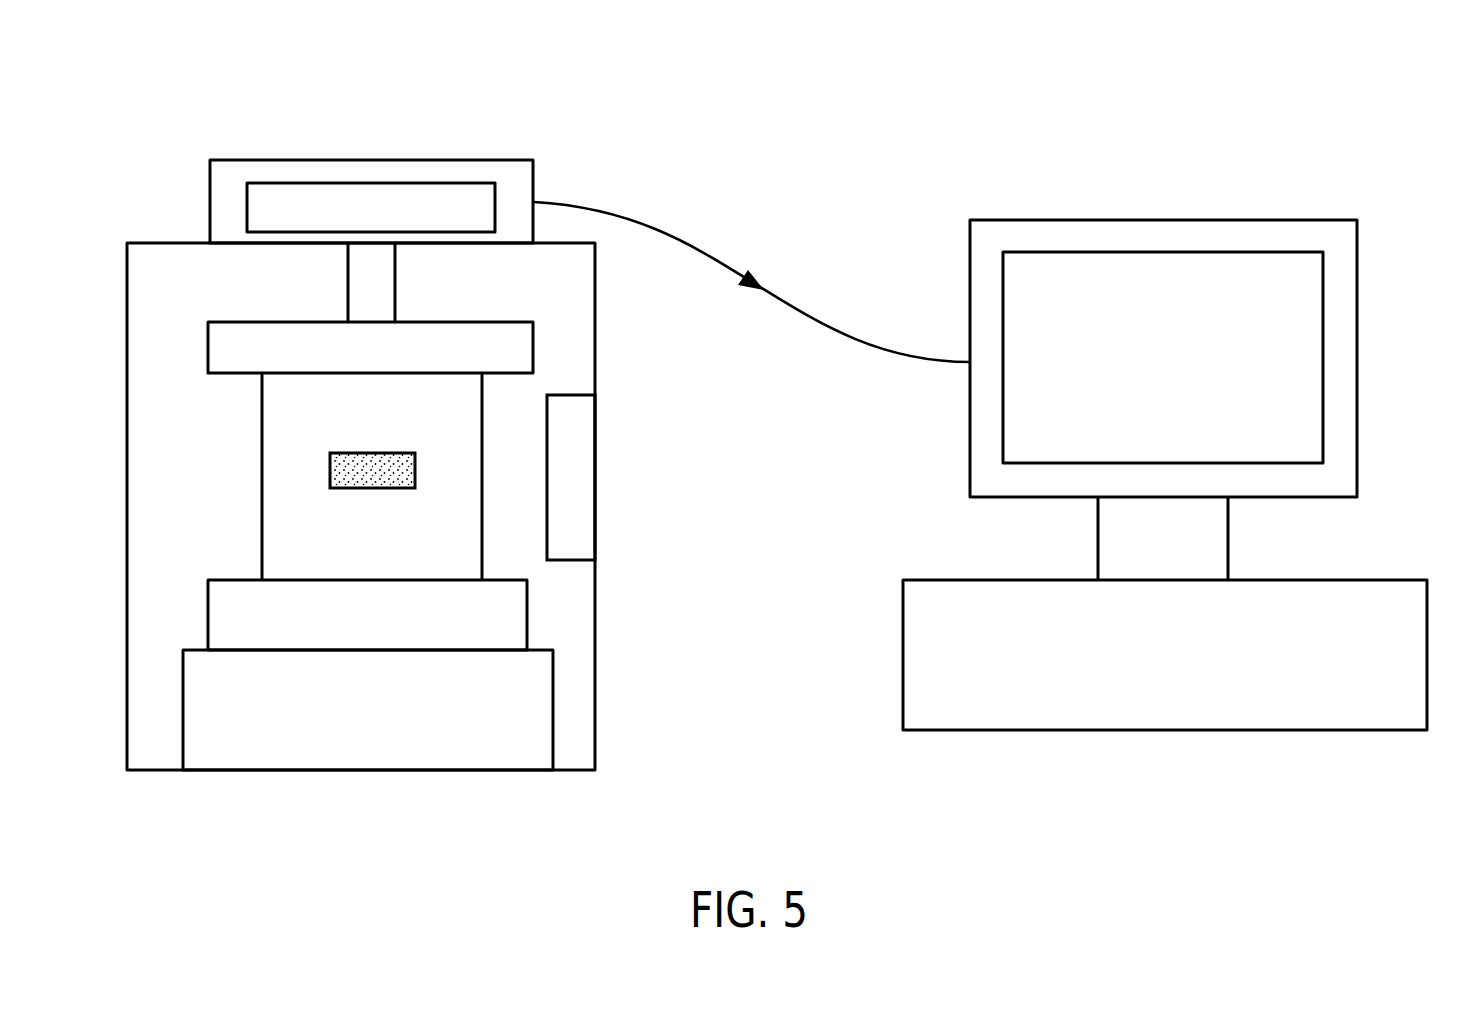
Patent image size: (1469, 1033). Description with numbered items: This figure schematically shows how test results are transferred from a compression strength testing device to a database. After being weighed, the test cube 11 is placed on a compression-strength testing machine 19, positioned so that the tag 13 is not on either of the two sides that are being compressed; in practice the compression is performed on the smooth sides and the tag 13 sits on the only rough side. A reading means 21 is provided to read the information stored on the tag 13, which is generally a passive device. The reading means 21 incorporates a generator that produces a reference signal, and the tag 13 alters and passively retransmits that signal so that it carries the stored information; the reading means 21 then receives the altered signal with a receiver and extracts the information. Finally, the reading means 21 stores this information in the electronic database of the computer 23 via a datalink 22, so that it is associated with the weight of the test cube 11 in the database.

The test cube 11 is at (262, 432).
The tag 13 is at (373, 489).
The compression-strength testing machine 19 is at (421, 104).
The reading means 21 is at (595, 461).
The datalink 22 is at (712, 252).
The computer 23 is at (1358, 276).